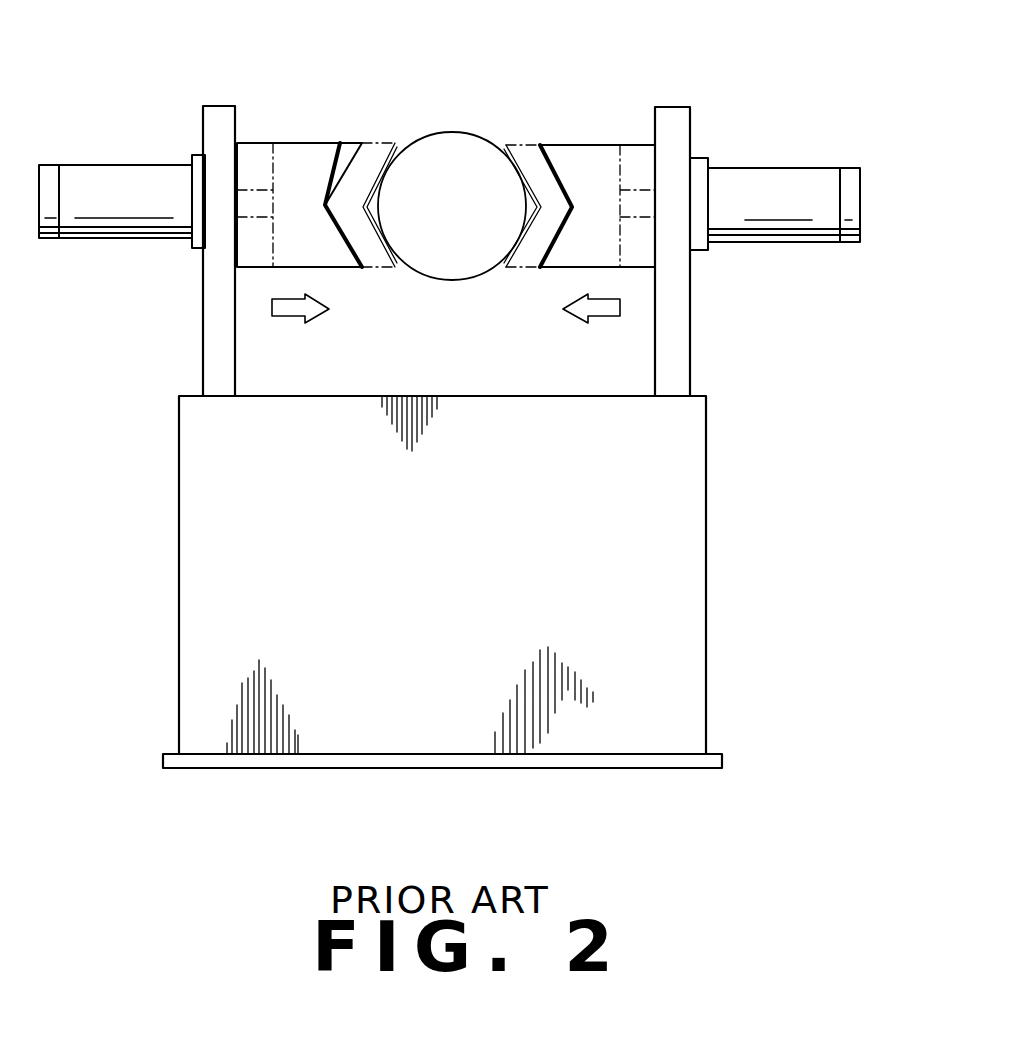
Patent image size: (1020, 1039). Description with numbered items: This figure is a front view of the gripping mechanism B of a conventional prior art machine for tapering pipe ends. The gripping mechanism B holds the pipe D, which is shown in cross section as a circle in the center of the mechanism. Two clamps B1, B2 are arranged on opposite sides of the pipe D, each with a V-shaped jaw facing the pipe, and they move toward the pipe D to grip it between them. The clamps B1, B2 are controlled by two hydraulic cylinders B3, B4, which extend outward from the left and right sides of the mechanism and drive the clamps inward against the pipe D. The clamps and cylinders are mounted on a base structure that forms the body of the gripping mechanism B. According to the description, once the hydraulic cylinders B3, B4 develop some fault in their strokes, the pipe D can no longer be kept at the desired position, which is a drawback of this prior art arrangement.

The gripping mechanism B is at (695, 83).
The clamp B1 is at (322, 142).
The clamp B2 is at (575, 143).
The hydraulic cylinder B3 is at (120, 165).
The hydraulic cylinder B4 is at (775, 168).
The pipe D is at (443, 132).